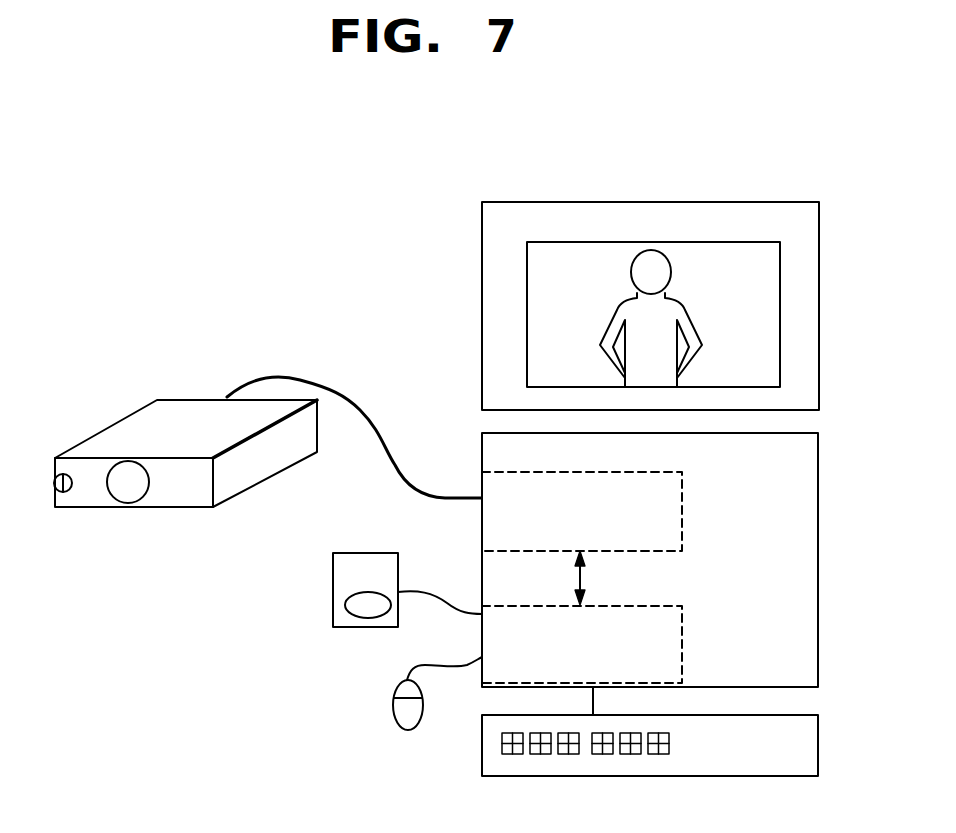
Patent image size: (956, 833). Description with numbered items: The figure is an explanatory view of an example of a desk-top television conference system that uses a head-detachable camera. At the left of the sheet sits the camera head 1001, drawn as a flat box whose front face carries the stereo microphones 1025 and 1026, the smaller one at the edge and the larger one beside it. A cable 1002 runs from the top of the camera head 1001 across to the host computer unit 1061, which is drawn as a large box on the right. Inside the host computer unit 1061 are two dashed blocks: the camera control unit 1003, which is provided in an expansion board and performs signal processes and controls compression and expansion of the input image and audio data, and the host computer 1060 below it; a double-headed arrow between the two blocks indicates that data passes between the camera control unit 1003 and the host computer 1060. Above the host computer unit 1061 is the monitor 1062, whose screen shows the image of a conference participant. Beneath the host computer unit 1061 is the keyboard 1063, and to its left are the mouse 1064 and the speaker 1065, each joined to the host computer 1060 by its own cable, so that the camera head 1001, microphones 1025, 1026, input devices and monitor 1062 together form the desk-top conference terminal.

The camera head 1001 is at (176, 445).
The cable 1002 is at (330, 383).
The camera control unit (CCU) 1003 is at (730, 499).
The stereo microphone 1025 is at (69, 490).
The stereo microphone 1026 is at (130, 497).
The host computer 1060 is at (683, 653).
The host computer unit 1061 is at (682, 560).
The monitor 1062 is at (819, 255).
The keyboard 1063 is at (818, 760).
The mouse 1064 is at (402, 707).
The speaker 1065 is at (362, 557).